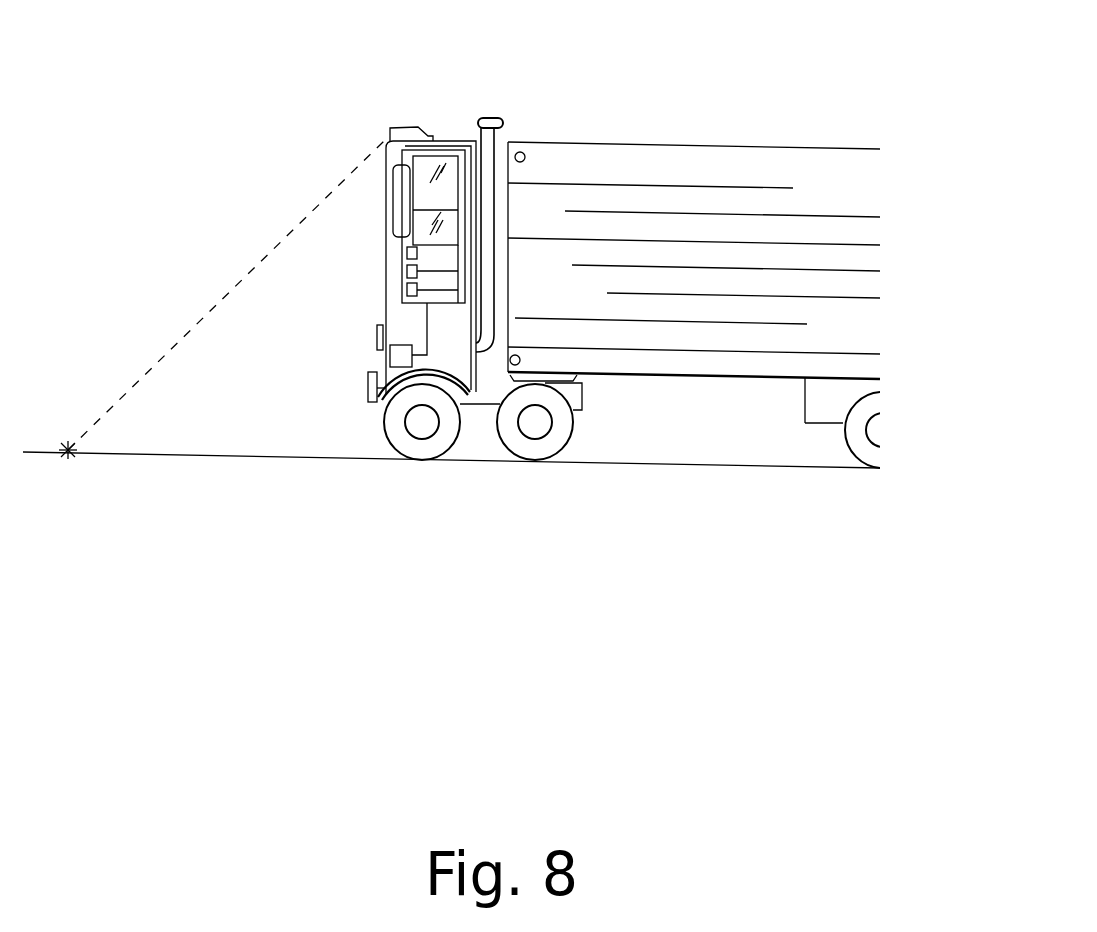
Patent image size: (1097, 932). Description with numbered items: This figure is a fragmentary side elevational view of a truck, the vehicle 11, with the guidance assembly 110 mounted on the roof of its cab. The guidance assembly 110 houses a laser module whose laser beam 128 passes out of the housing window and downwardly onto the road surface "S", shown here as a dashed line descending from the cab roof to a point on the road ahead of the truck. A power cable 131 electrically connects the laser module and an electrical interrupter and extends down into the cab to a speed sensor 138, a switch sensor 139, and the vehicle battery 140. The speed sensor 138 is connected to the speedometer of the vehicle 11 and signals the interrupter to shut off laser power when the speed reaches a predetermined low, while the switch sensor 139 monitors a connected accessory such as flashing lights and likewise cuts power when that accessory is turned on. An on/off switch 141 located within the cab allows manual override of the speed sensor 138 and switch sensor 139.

The vehicle 11 is at (713, 200).
The guidance assembly 110 is at (384, 121).
The laser beam 128 is at (183, 338).
The power cable 131 is at (450, 248).
The speed sensor 138 is at (407, 252).
The switch sensor 139 is at (407, 272).
The vehicle battery 140 is at (390, 356).
The on/off switch 141 is at (407, 290).